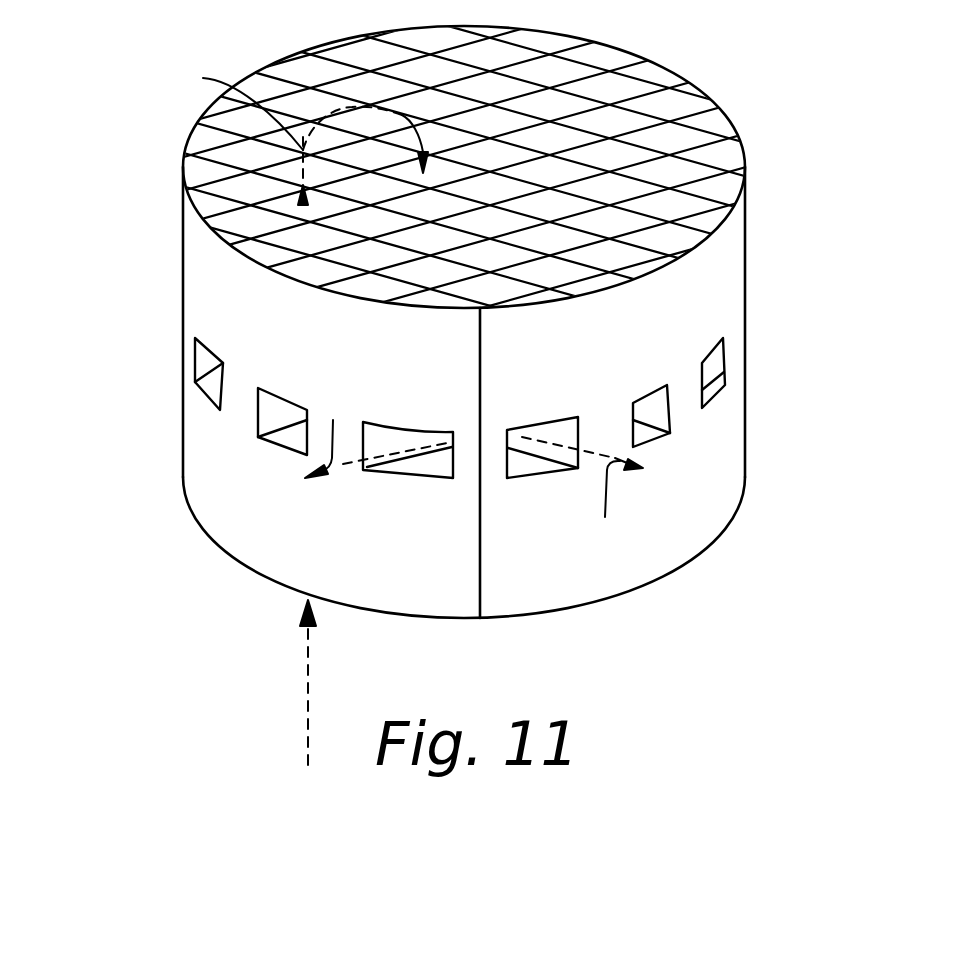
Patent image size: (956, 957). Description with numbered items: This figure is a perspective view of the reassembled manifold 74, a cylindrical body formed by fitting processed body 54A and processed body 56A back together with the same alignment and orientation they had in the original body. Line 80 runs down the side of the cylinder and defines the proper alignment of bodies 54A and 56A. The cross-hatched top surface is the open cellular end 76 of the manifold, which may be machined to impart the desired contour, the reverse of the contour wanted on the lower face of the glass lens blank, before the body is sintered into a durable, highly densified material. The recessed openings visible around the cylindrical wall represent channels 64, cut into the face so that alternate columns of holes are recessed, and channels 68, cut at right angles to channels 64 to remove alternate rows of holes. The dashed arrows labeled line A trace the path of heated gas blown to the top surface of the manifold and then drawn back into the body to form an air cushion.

The body 54A is at (730, 267).
The body 56A is at (730, 448).
The channels 64 is at (523, 463).
The channels 68 is at (212, 362).
The manifold 74 is at (164, 539).
The open cellular end 76 is at (602, 72).
The line 80 is at (480, 372).